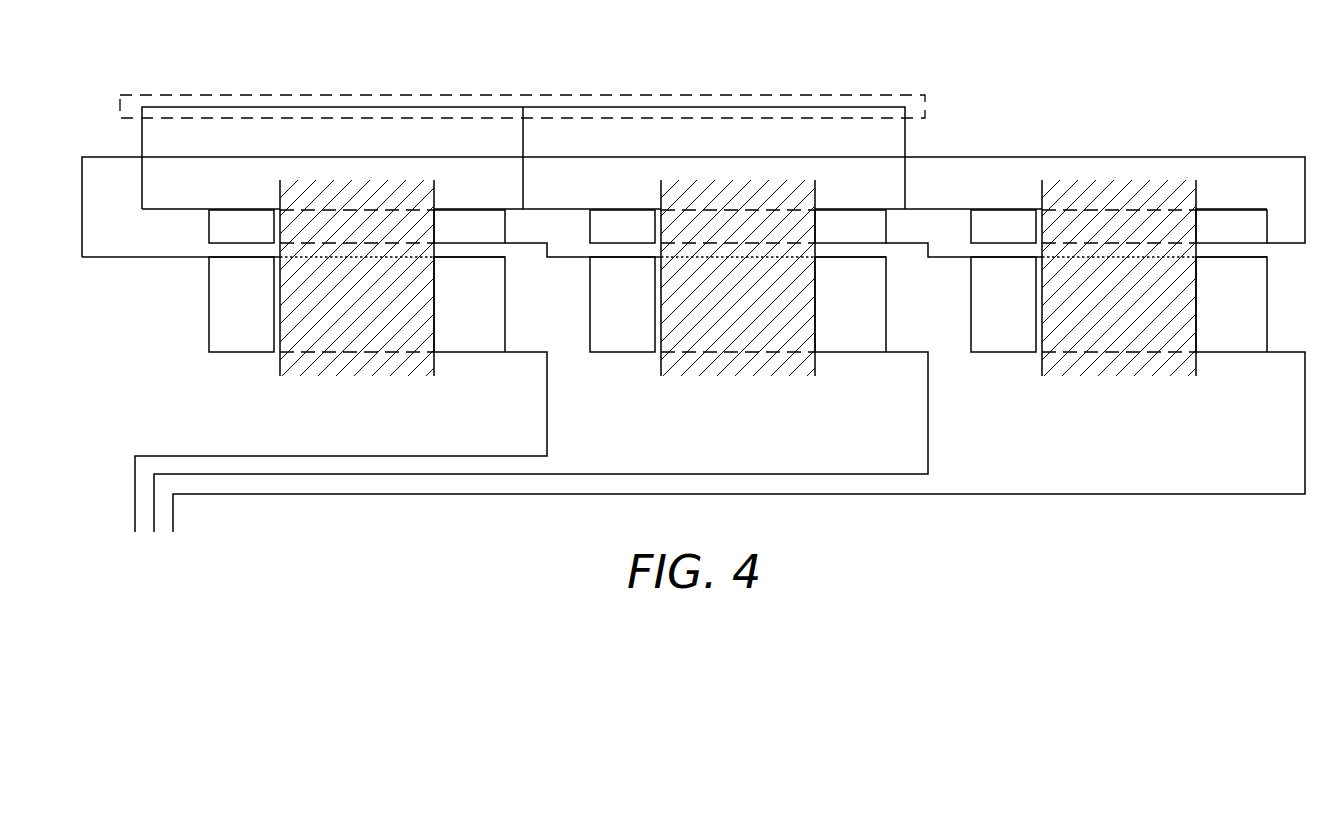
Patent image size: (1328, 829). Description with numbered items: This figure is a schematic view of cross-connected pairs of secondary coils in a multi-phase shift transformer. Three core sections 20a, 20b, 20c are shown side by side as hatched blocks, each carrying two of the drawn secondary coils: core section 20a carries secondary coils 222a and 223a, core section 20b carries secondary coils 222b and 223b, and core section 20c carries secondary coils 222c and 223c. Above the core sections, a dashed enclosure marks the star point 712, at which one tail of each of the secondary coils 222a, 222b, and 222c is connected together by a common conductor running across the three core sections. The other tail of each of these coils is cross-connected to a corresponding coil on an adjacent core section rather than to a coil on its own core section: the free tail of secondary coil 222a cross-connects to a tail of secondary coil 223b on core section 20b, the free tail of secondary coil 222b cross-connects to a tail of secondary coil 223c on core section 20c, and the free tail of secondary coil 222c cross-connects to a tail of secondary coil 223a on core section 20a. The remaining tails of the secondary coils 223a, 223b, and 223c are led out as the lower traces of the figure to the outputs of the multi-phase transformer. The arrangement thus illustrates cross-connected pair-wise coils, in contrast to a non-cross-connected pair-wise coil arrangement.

The star point 712 is at (908, 93).
The secondary coil 222a is at (235, 220).
The secondary coil 222b is at (616, 220).
The secondary coil 222c is at (997, 220).
The secondary coil 223a is at (238, 353).
The secondary coil 223b is at (619, 353).
The secondary coil 223c is at (1000, 353).
The core section 20a is at (358, 378).
The core section 20b is at (739, 378).
The core section 20c is at (1120, 378).